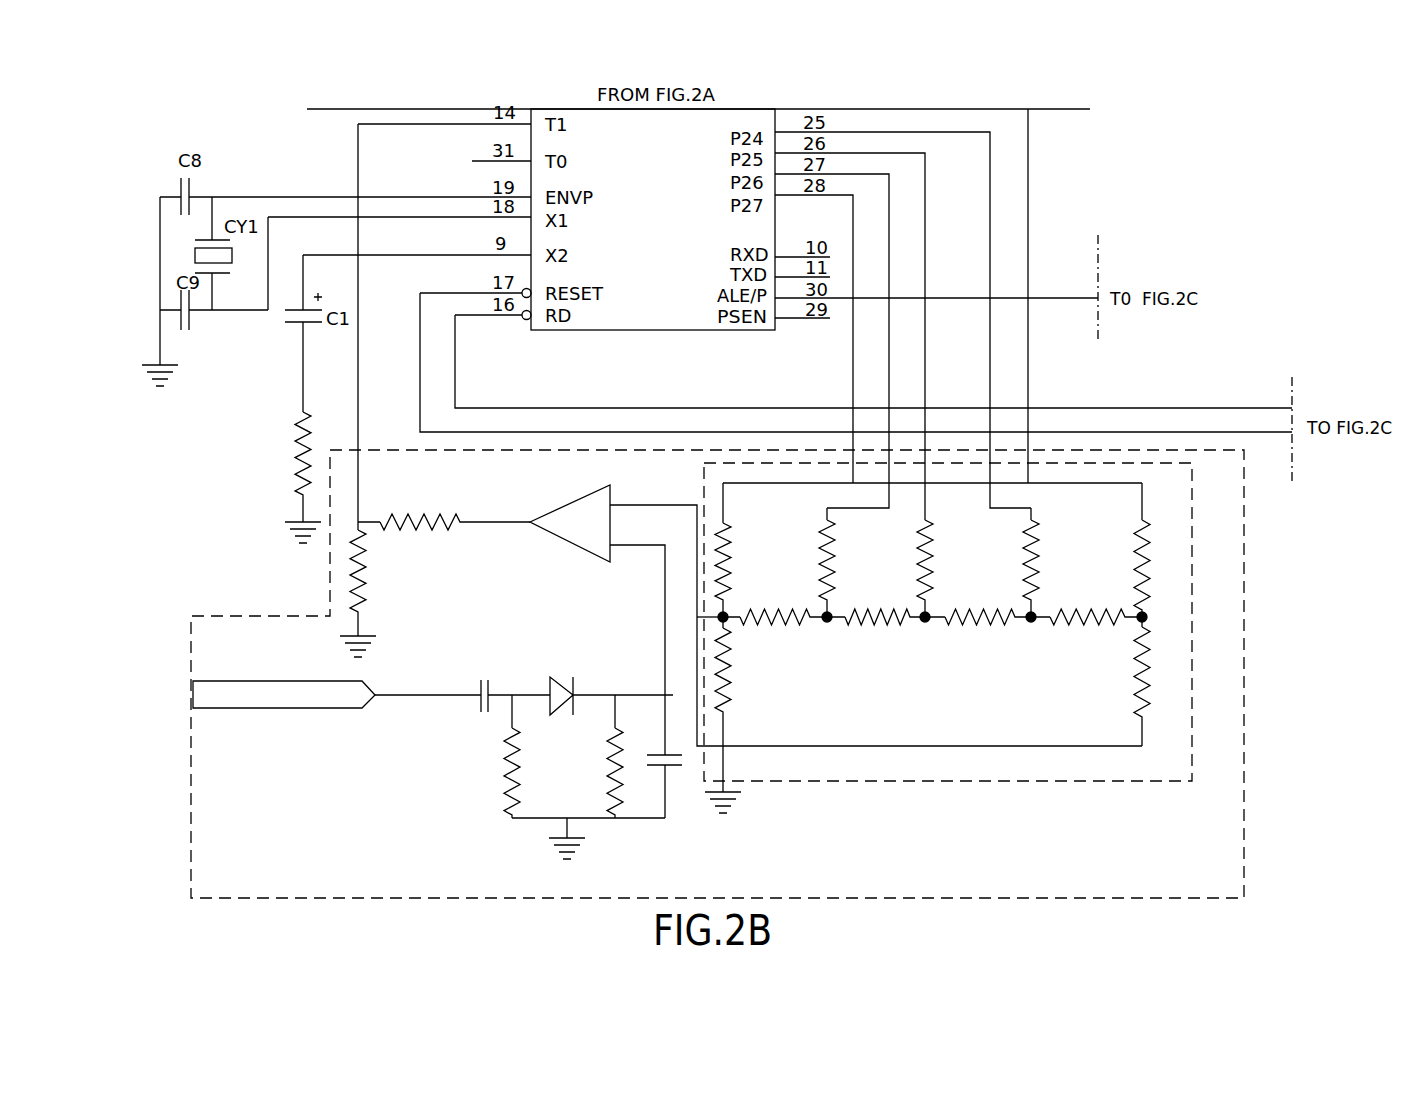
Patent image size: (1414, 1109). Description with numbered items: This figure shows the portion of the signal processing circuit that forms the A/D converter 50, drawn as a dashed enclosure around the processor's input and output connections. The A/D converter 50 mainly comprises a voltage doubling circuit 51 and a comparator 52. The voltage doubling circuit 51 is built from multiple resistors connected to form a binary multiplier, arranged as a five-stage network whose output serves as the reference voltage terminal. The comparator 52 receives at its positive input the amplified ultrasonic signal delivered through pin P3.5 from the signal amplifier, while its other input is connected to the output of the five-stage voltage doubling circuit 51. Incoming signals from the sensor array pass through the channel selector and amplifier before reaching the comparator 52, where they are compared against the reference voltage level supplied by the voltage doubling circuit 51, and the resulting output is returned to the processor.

The A/D converter 50 is at (1244, 552).
The voltage doubling circuit 51 is at (1192, 740).
The comparator 52 is at (573, 539).